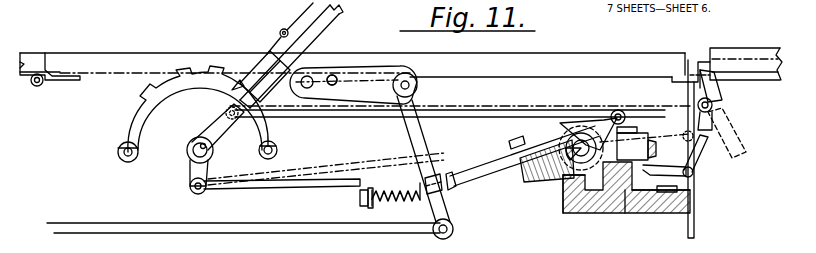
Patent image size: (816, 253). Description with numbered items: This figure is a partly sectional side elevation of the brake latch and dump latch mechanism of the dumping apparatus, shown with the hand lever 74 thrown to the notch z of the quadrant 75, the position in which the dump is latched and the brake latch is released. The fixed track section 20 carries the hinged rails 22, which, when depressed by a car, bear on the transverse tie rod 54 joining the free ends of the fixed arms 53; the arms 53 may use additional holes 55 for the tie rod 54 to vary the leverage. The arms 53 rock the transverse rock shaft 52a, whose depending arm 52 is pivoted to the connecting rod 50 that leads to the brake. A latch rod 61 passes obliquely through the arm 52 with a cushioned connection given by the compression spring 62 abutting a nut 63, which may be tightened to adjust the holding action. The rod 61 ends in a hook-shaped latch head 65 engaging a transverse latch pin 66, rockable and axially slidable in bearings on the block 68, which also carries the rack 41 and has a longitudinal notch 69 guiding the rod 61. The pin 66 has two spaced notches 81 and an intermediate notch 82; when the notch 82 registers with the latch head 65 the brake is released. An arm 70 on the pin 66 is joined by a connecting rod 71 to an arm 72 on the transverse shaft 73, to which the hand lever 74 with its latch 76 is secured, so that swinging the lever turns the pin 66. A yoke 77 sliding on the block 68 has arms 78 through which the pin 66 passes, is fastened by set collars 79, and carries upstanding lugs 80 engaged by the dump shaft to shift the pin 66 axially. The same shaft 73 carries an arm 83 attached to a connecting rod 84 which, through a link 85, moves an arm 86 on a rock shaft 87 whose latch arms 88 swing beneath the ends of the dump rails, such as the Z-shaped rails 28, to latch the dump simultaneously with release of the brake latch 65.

The track section 20 is at (558, 57).
The hinged rails 22 is at (73, 82).
The Z-shaped rails 28 is at (730, 54).
The rack 41 is at (668, 194).
The connecting rod 50 is at (303, 224).
The depending arm 52 is at (434, 224).
The transverse rock shaft 52a is at (418, 86).
The fixed arms 53 is at (392, 102).
The transverse tie rod 54 is at (300, 90).
The holes 55 is at (334, 74).
The latch rod 61 is at (462, 180).
The compression spring 62 is at (400, 202).
The nut 63 is at (366, 210).
The latch head 65 is at (583, 134).
The latch pin 66 is at (550, 174).
The block 68 is at (612, 213).
The longitudinal notch 69 is at (516, 141).
The arm 70 is at (616, 110).
The connecting rod 71 is at (484, 116).
The arm 72 is at (228, 128).
The transverse shaft 73 is at (187, 150).
The hand lever 74 is at (338, 22).
The quadrant 75 is at (122, 143).
The latch 76 is at (280, 35).
The yoke 77 is at (632, 213).
The arms 78 is at (590, 200).
The set collars 79 is at (570, 126).
The upstanding lugs 80 is at (632, 128).
The notches 81 is at (578, 128).
The intermediate notch 82 is at (568, 188).
The arm 83 is at (190, 186).
The connecting rod 84 is at (212, 186).
The link 85 is at (730, 140).
The arm 86 is at (706, 160).
The rock shaft 87 is at (712, 105).
The latch arms 88 is at (720, 86).